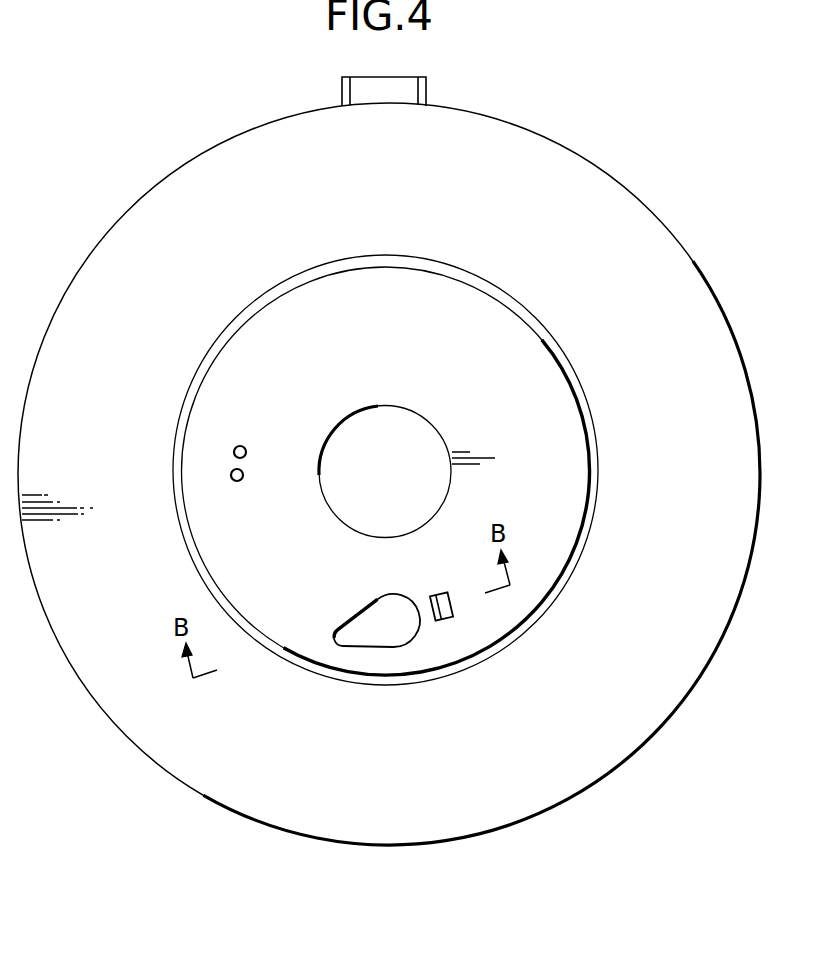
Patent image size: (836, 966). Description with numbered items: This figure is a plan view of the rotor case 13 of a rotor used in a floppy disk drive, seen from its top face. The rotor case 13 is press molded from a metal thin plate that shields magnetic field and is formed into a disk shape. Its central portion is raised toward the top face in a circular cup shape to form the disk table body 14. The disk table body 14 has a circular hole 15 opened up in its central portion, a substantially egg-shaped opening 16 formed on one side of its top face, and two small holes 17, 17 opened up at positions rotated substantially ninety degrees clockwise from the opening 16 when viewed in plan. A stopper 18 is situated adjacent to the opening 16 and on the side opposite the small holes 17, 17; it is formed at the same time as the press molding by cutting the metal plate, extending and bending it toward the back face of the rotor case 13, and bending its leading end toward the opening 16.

The rotor case 13 is at (640, 184).
The disk table body 14 is at (545, 327).
The circular hole 15 is at (368, 410).
The opening 16 is at (354, 625).
The small holes 17 is at (246, 455).
The stopper 18 is at (454, 606).